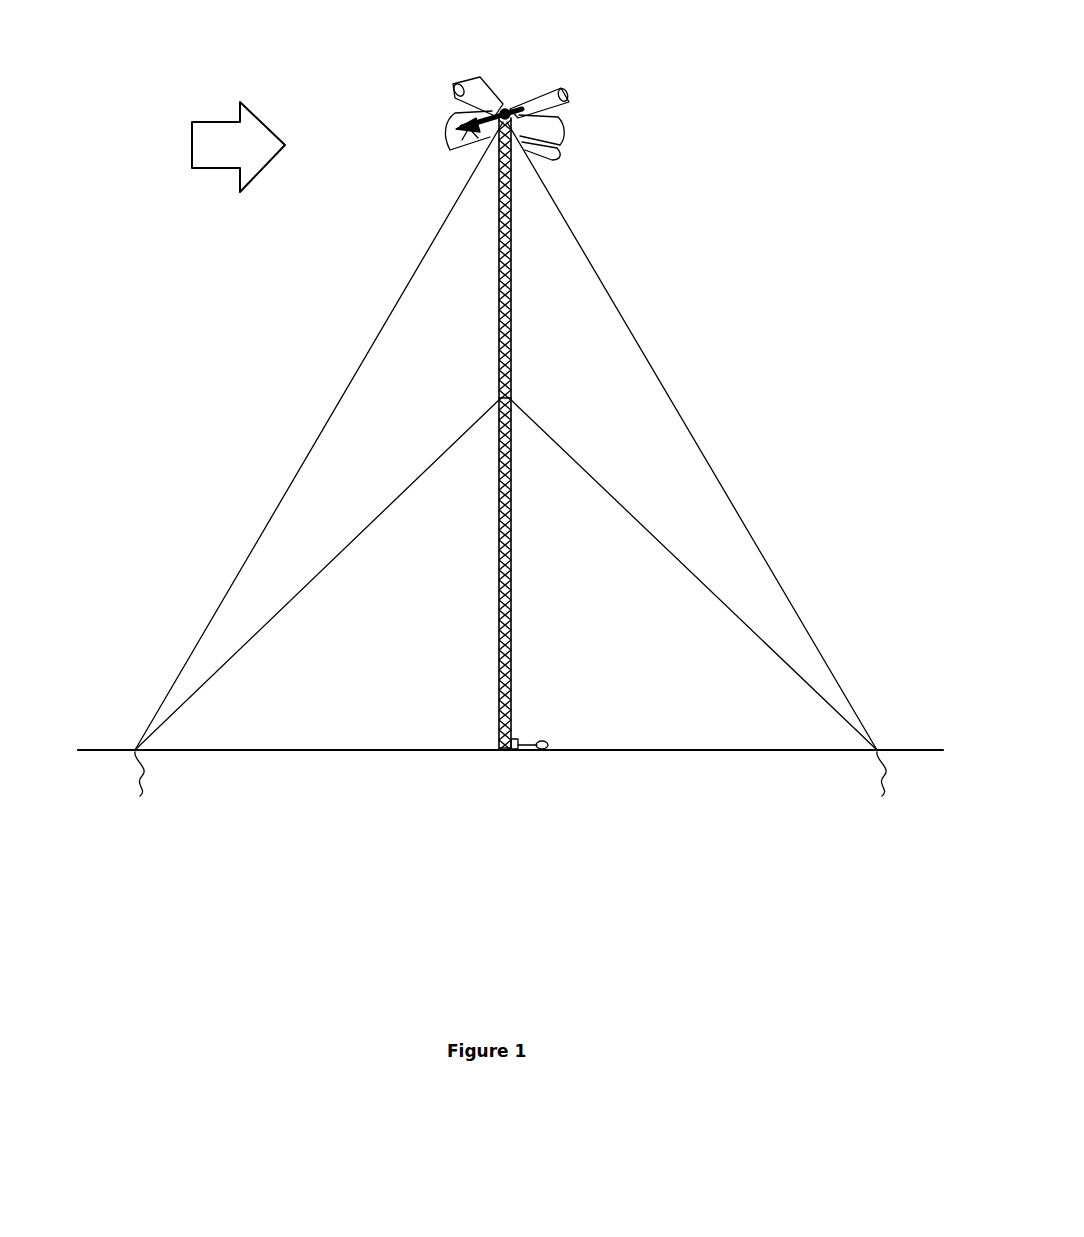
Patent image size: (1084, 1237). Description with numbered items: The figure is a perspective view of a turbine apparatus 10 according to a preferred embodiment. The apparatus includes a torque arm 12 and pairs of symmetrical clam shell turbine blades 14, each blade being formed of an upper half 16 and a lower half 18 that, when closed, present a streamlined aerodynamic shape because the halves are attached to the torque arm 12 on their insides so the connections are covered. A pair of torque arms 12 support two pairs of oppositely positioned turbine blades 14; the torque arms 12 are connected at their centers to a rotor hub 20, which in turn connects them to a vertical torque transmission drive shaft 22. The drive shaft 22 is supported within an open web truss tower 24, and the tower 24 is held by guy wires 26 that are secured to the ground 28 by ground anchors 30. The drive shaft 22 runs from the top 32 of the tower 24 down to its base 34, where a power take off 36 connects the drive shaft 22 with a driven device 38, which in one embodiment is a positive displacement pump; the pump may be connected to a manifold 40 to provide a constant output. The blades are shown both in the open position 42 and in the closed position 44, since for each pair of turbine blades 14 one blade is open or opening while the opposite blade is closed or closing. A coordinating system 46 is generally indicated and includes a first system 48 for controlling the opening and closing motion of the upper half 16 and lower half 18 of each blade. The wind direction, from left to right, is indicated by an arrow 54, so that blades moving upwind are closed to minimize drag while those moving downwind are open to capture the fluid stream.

The turbine apparatus 10 is at (205, 500).
The torque arm 12 is at (513, 108).
The turbine blade 14 is at (575, 92).
The upper half 16 is at (456, 105).
The lower half 18 is at (456, 164).
The rotor hub 20 is at (502, 108).
The vertical torque transmission drive shaft 22 is at (498, 344).
The open web truss tower 24 is at (512, 356).
The guy wires 26 is at (694, 441).
The ground 28 is at (362, 835).
The ground anchors 30 is at (508, 783).
The top of tower 32 is at (537, 133).
The base of tower 34 is at (503, 748).
The power take off 36 is at (517, 748).
The driven device 38 is at (513, 752).
The manifold 40 is at (545, 744).
The open position 42 is at (556, 152).
The closed position 44 is at (465, 70).
The coordinating system 46 is at (440, 113).
The first system 48 is at (440, 140).
The arrow 54 is at (213, 122).